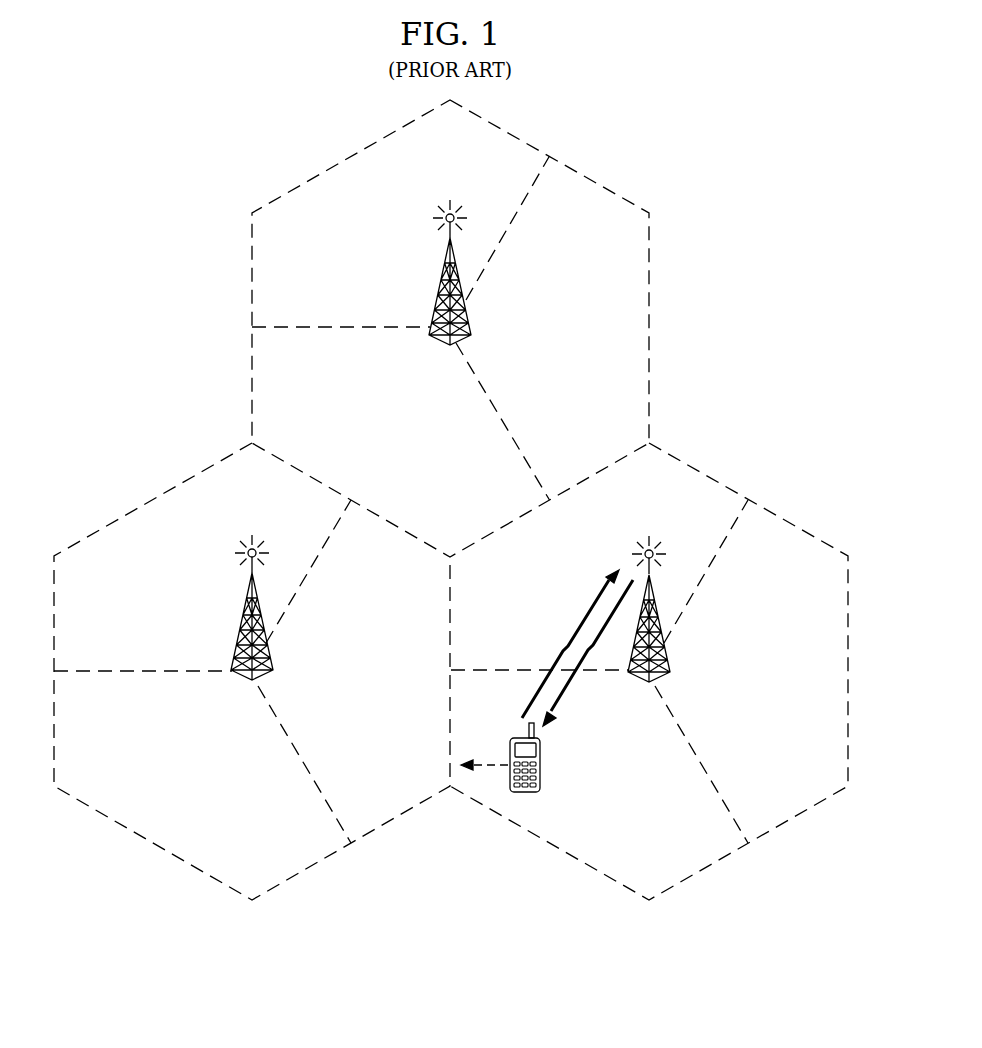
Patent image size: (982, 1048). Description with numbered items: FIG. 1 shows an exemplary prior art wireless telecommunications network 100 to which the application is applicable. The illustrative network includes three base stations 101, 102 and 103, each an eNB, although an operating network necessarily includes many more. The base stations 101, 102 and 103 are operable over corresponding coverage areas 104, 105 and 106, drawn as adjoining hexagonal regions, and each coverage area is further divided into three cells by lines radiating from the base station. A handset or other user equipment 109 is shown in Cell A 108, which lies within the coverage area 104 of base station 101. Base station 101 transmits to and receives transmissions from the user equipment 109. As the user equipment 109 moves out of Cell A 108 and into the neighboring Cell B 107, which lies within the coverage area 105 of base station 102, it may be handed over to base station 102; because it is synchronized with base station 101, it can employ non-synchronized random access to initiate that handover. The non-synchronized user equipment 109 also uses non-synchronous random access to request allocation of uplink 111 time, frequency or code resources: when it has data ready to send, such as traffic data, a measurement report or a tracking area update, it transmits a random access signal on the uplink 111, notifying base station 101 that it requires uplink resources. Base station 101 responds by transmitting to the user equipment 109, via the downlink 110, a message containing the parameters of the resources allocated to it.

The wireless telecommunications network 100 is at (261, 112).
The base station 101 is at (671, 657).
The base station 102 is at (241, 626).
The base station 103 is at (435, 293).
The coverage area 104 is at (717, 858).
The coverage area 105 is at (163, 848).
The coverage area 106 is at (580, 172).
The Cell B 107 is at (354, 700).
The Cell A 108 is at (610, 833).
The user equipment 109 is at (541, 752).
The downlink 110 is at (565, 692).
The uplink 111 is at (583, 612).